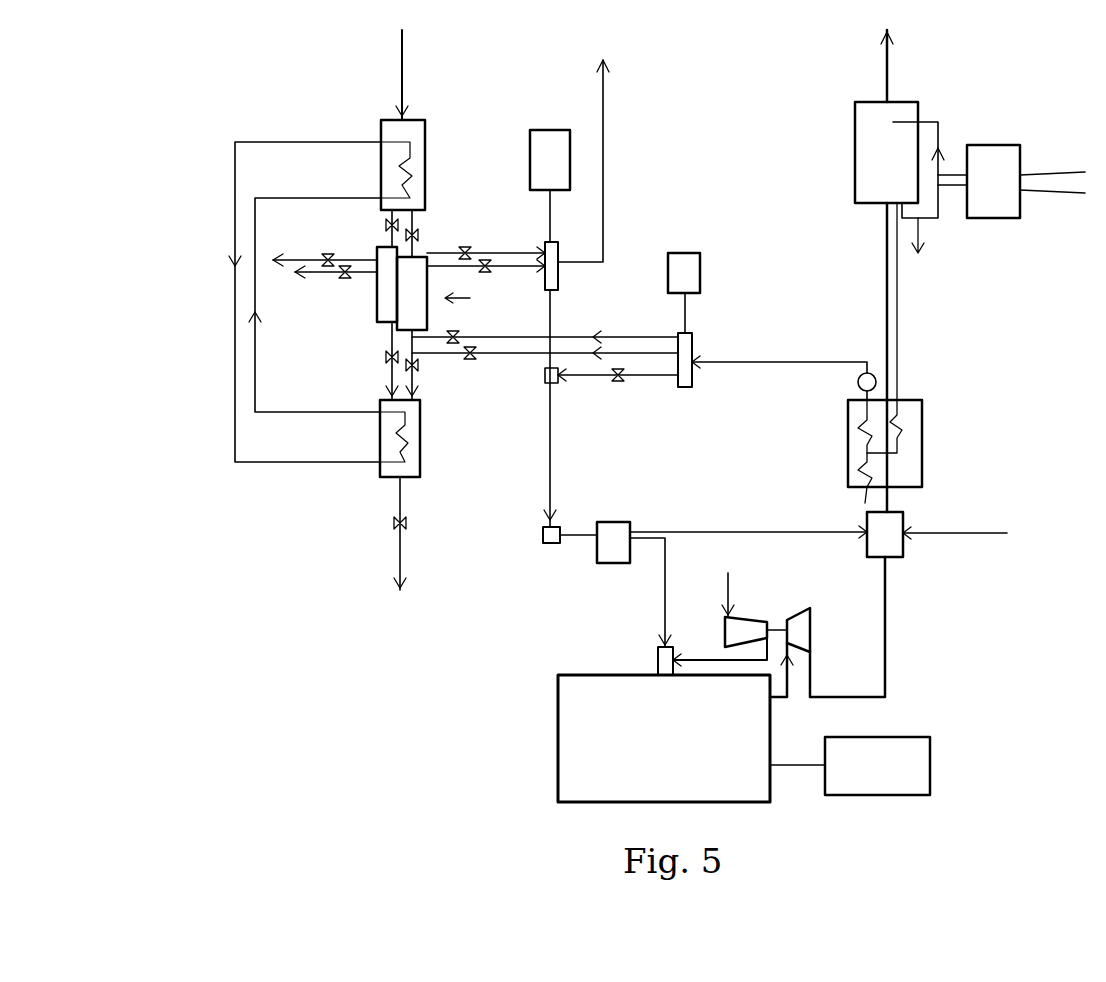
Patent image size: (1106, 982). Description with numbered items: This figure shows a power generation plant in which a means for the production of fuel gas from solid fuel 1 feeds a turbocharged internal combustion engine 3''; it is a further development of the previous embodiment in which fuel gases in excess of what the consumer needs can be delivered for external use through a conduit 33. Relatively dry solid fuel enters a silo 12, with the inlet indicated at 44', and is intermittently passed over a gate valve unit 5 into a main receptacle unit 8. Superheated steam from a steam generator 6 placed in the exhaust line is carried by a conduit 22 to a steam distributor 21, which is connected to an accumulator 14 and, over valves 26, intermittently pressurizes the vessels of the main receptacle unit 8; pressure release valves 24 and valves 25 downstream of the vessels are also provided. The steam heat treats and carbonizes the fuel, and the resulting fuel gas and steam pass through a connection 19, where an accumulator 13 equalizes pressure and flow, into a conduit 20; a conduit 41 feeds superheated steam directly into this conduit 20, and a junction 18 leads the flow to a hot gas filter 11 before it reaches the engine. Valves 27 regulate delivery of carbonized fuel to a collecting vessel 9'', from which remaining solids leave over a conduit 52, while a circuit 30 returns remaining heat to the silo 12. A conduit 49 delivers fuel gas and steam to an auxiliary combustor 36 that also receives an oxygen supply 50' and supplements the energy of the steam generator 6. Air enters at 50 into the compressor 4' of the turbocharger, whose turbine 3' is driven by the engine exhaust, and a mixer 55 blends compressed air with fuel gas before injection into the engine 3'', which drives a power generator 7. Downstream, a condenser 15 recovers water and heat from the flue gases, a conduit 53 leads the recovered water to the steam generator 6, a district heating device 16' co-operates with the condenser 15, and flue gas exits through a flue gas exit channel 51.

The means for the production of fuel gas from solid fuel 1 is at (202, 340).
The turbine of the turbine-compressor unit 3' is at (827, 627).
The internal combustion engine 3'' is at (636, 738).
The compressor of the turbine-compressor unit 4' is at (736, 626).
The gate valve unit 5 is at (441, 219).
The steam generator 6 is at (924, 441).
The power generator 7 is at (876, 800).
The main receptacle unit 8 is at (435, 288).
The collecting vessel 9'' is at (421, 438).
The hot gas filter 11 is at (620, 522).
The silo 12 is at (427, 147).
The accumulator 13 is at (530, 136).
The accumulator 14 is at (702, 277).
The condenser 15 is at (855, 132).
The district heating device 16' is at (1011, 209).
The junction 18 is at (548, 545).
The connection 19 is at (560, 278).
The conduit 20 is at (553, 453).
The steam distributor 21 is at (694, 343).
The conduit 22 is at (776, 360).
The pressure release valves 24 is at (346, 267).
The valves 25 is at (486, 262).
The valves 26 is at (470, 360).
The valves 27 is at (386, 359).
The circuit 30 is at (255, 465).
The conduit 33 is at (605, 129).
The auxiliary combustor 36 is at (866, 556).
The conduit 41 is at (648, 378).
The inlet 44' is at (371, 75).
The conduit 49 is at (775, 530).
The entry for air 50 is at (746, 593).
The oxygen supply 50' is at (955, 557).
The flue gas exit channel 51 is at (892, 72).
The conduit 52 is at (397, 544).
The conduit 53 is at (905, 401).
The mixer 55 is at (657, 661).